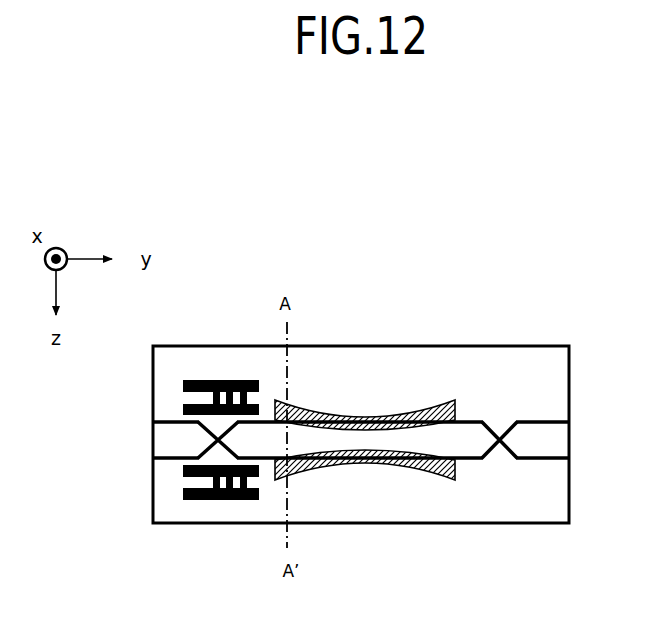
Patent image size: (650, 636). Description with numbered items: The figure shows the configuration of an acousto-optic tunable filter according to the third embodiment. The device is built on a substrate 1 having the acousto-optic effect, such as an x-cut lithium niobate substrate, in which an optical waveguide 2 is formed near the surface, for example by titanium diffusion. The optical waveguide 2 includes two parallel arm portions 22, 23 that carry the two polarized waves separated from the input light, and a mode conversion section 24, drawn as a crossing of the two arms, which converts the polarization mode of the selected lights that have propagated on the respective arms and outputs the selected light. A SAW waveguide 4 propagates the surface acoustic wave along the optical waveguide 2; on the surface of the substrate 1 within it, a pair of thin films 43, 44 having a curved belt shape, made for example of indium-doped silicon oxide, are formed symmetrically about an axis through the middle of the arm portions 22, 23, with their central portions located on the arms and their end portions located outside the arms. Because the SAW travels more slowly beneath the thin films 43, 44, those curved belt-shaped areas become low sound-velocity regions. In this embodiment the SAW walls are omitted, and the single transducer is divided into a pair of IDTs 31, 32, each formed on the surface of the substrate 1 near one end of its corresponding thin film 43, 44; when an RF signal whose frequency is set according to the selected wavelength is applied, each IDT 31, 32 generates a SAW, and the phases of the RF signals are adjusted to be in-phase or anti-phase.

The substrate 1 is at (537, 523).
The optical waveguide 2 is at (181, 435).
The SAW waveguide 4 is at (365, 417).
The arm portion 22 is at (472, 420).
The arm portion 23 is at (473, 457).
The mode conversion section 24 is at (502, 430).
The IDT 31 is at (225, 380).
The IDT 32 is at (232, 499).
The thin film 43 is at (387, 412).
The thin film 44 is at (395, 465).